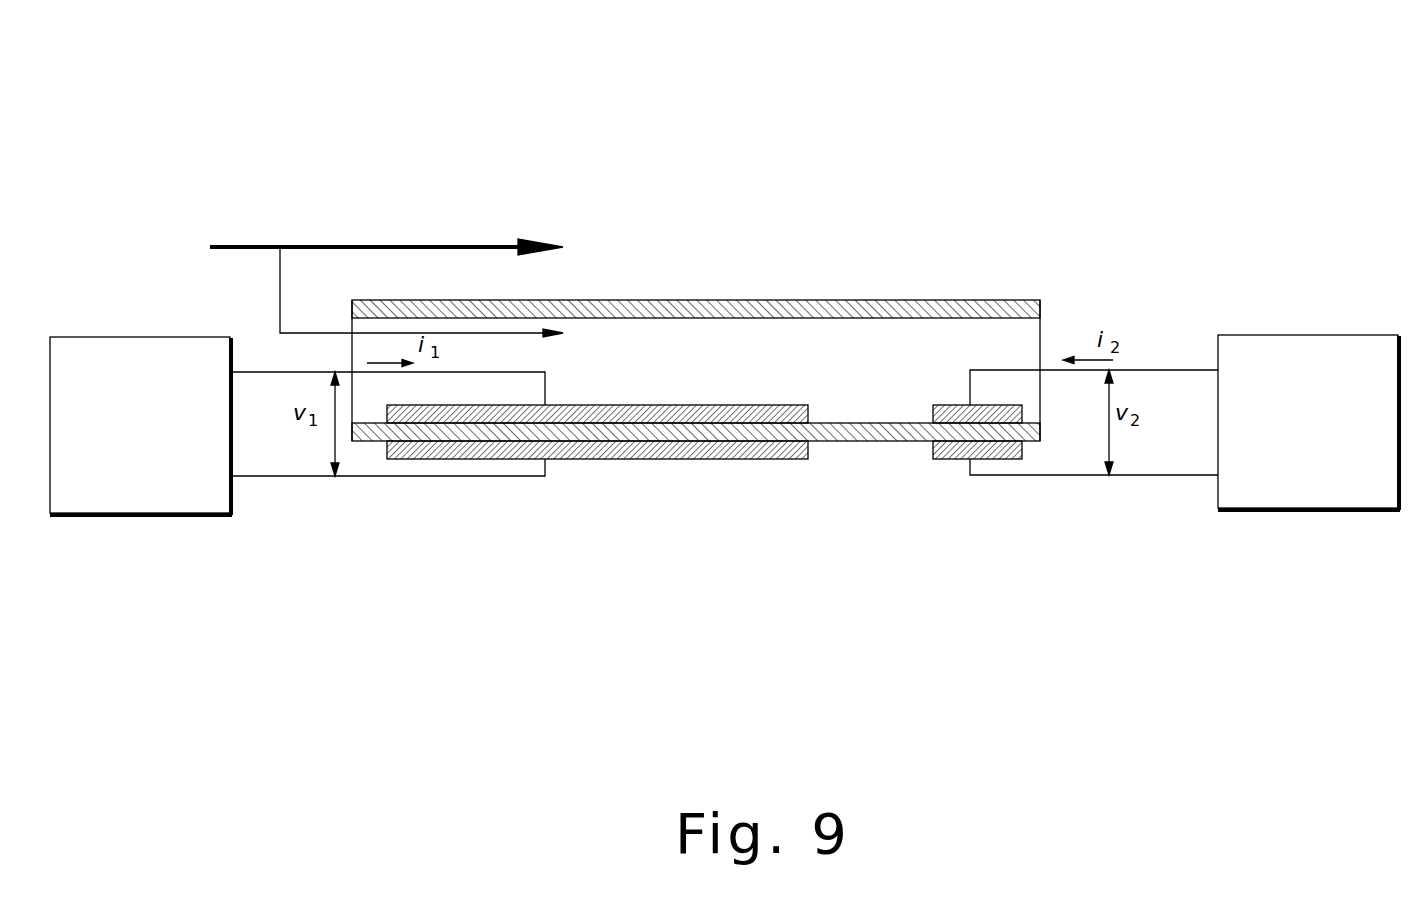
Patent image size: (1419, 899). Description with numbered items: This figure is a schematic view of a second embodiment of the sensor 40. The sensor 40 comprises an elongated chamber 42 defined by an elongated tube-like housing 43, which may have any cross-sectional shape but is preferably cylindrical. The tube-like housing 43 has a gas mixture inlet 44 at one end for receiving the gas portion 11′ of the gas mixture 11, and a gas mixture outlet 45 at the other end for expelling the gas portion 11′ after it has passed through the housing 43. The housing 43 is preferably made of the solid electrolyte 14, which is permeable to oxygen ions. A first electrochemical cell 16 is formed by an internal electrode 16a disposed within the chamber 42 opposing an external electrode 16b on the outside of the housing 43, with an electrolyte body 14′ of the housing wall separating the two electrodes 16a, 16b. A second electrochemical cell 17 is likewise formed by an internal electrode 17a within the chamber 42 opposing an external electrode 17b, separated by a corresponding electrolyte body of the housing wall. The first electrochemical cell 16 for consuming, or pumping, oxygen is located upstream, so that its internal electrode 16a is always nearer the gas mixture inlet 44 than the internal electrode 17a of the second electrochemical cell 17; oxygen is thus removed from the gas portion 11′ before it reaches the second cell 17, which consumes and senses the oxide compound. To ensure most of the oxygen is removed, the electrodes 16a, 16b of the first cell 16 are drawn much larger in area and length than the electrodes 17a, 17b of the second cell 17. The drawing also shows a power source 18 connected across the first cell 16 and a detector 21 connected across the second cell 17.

The sensor 40 is at (1181, 98).
The tube-like housing 43 is at (805, 238).
The gas mixture outlet 45 is at (1064, 319).
The gas mixture 11 is at (478, 246).
The gas portion 11′ is at (510, 334).
The gas mixture inlet 44 is at (325, 353).
The solid electrolyte 14 is at (667, 306).
The electrolyte body 14′ is at (447, 430).
The elongated chamber 42 is at (806, 358).
The first electrochemical cell 16 is at (571, 489).
The internal electrode 16a is at (665, 405).
The external electrode 16b is at (653, 459).
The second electrochemical cell 17 is at (984, 501).
The internal electrode 17a is at (940, 405).
The external electrode 17b is at (943, 459).
The power source 18 is at (127, 514).
The detector 21 is at (1293, 510).